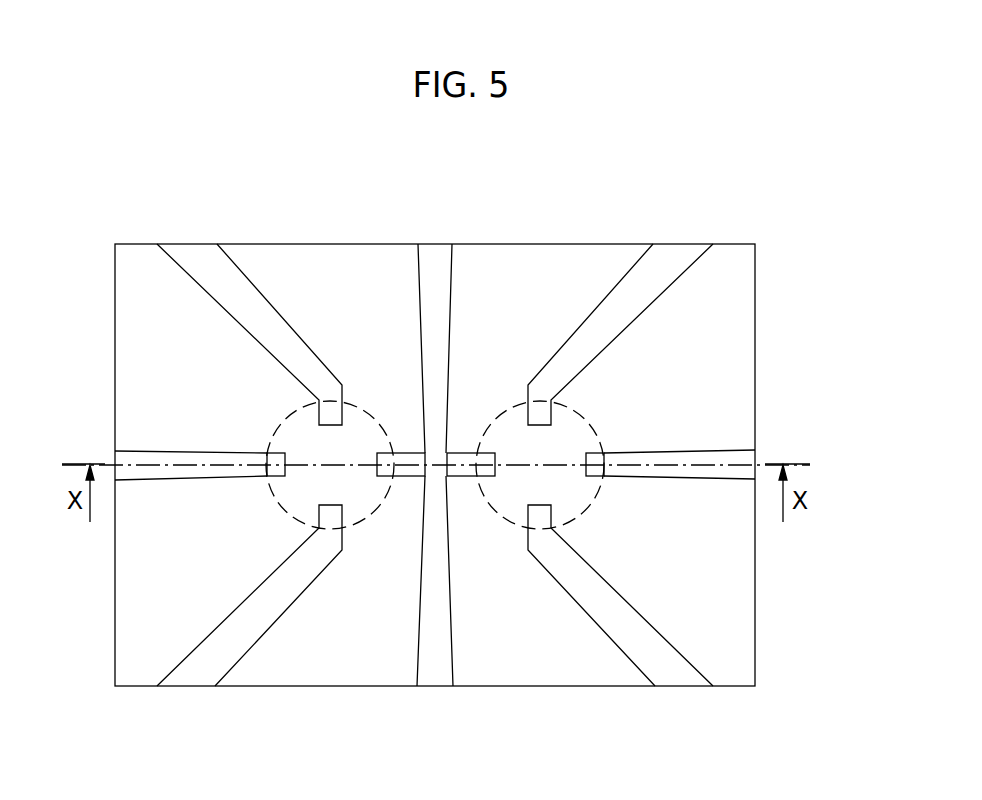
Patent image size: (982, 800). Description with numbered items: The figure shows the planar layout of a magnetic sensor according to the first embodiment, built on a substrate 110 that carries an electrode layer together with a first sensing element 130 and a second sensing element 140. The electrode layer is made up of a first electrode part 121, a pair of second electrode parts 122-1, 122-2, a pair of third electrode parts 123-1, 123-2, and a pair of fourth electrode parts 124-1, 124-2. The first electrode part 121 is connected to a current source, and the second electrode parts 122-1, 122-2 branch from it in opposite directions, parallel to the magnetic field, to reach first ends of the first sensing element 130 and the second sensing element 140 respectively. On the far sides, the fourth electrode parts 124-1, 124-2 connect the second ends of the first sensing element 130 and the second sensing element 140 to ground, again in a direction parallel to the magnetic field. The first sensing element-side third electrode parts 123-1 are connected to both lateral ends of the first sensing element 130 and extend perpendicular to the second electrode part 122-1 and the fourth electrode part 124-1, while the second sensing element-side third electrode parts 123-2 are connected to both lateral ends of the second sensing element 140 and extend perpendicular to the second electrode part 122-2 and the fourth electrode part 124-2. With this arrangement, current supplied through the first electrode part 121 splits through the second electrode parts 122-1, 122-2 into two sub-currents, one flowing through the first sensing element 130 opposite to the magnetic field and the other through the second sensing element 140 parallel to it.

The substrate 110 is at (156, 627).
The first electrode part 121 is at (438, 417).
The second electrode part 122-1 is at (393, 482).
The second electrode part 122-2 is at (477, 482).
The first sensing element-side third electrode parts 123-1 is at (340, 405).
The second sensing element-side third electrode parts 123-2 is at (553, 422).
The fourth electrode part 124-1 is at (192, 457).
The fourth electrode part 124-2 is at (667, 452).
The first sensing element 130 is at (363, 528).
The second sensing element 140 is at (513, 530).